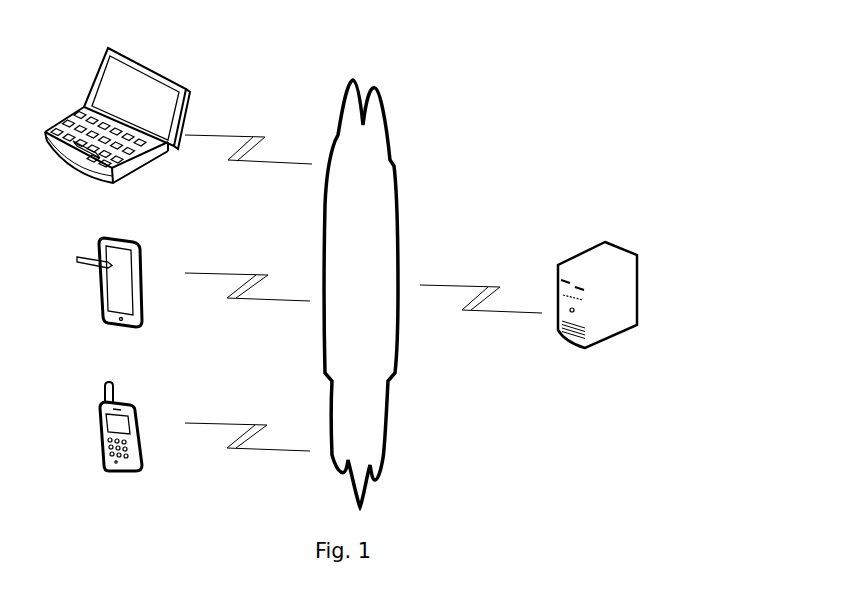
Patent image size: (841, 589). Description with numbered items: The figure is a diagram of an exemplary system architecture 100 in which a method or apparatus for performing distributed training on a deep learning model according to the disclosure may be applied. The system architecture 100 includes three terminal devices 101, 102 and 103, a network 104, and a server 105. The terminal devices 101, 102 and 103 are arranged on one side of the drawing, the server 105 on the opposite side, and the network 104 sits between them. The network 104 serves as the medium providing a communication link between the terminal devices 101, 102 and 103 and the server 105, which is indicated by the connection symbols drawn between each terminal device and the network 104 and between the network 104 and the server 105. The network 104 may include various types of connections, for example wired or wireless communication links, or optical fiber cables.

The system architecture 100 is at (606, 25).
The terminal device 101 is at (121, 444).
The terminal device 102 is at (109, 298).
The terminal device 103 is at (117, 132).
The network 104 is at (361, 293).
The server 105 is at (597, 311).